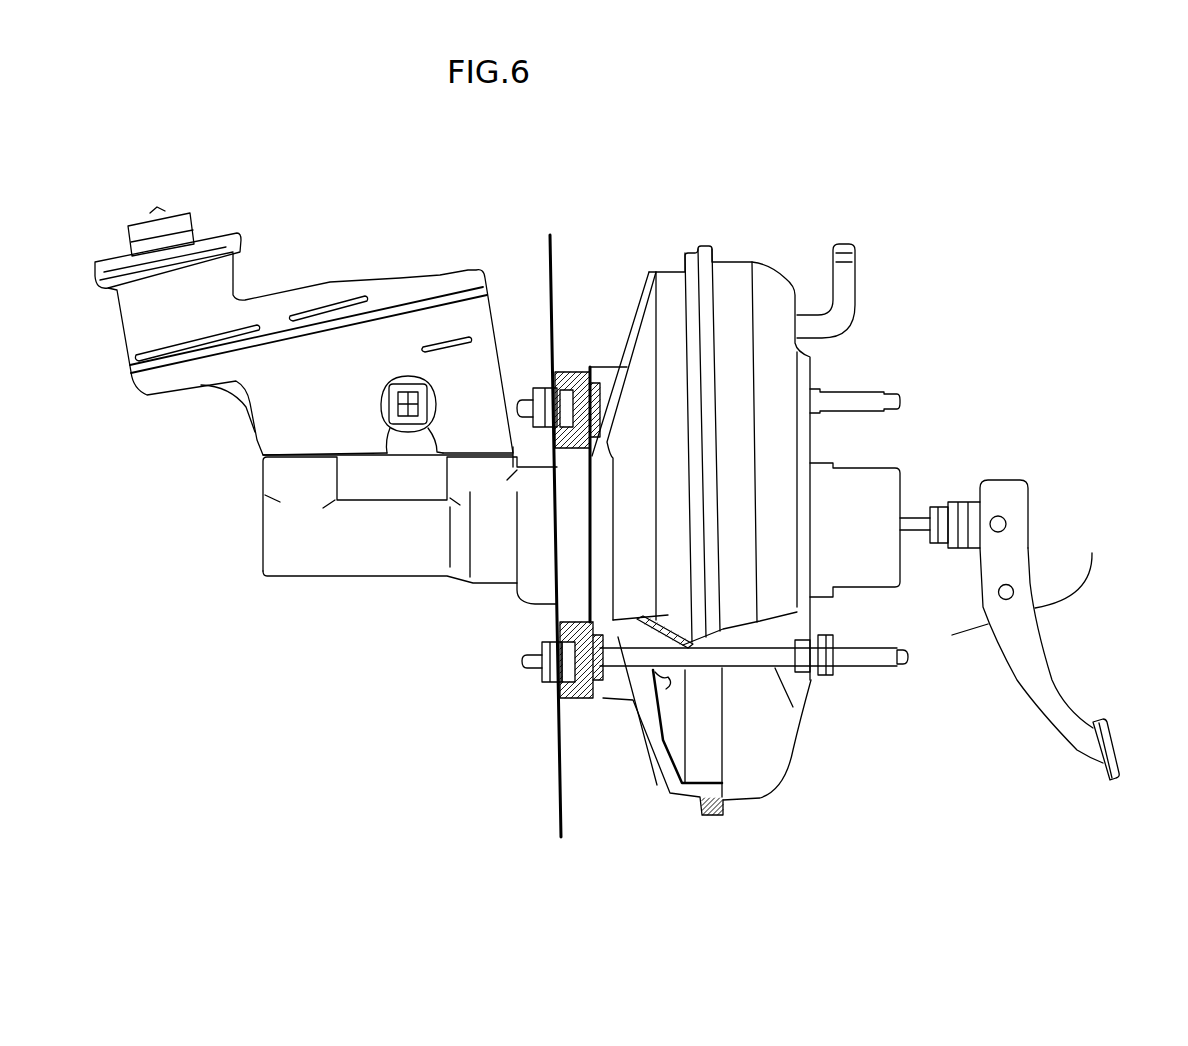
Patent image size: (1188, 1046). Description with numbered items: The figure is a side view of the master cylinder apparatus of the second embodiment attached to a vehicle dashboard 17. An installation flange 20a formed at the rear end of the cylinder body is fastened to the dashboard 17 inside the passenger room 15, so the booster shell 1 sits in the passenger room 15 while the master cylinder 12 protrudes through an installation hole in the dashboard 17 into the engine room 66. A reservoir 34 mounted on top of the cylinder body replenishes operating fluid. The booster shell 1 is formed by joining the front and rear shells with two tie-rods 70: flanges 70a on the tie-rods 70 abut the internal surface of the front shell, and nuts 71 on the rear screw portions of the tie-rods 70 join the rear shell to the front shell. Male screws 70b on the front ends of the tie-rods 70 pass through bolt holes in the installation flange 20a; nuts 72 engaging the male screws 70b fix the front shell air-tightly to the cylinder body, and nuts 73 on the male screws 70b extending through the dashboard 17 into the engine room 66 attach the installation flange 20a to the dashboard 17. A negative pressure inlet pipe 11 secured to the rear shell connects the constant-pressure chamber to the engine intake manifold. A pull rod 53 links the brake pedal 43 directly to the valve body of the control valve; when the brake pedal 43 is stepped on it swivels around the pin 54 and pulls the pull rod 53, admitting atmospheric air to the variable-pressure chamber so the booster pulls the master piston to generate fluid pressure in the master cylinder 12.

The booster shell 1 is at (736, 272).
The negative pressure inlet pipe 11 is at (850, 276).
The master cylinder 12 is at (490, 568).
The passenger room 15 is at (954, 782).
The dashboard 17 is at (560, 793).
The installation flange 20a is at (562, 373).
The reservoir 34 is at (349, 337).
The brake pedal 43 is at (1018, 676).
The pull rod 53 is at (914, 517).
The pin 54 is at (1014, 591).
The engine room 66 is at (309, 751).
The tie-rods 70 is at (803, 725).
The flanges 70a is at (604, 700).
The male screws 70b is at (522, 661).
The nuts 71 is at (823, 675).
The nuts 72 is at (568, 690).
The nuts 73 is at (547, 682).